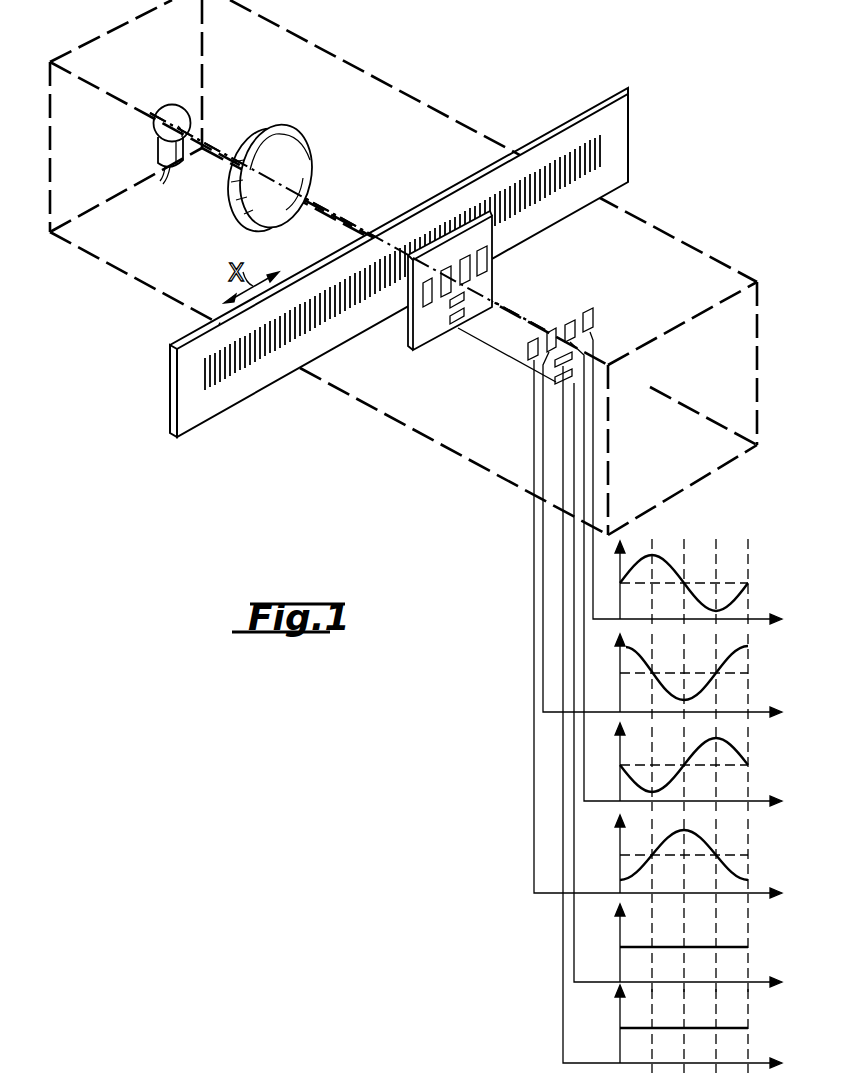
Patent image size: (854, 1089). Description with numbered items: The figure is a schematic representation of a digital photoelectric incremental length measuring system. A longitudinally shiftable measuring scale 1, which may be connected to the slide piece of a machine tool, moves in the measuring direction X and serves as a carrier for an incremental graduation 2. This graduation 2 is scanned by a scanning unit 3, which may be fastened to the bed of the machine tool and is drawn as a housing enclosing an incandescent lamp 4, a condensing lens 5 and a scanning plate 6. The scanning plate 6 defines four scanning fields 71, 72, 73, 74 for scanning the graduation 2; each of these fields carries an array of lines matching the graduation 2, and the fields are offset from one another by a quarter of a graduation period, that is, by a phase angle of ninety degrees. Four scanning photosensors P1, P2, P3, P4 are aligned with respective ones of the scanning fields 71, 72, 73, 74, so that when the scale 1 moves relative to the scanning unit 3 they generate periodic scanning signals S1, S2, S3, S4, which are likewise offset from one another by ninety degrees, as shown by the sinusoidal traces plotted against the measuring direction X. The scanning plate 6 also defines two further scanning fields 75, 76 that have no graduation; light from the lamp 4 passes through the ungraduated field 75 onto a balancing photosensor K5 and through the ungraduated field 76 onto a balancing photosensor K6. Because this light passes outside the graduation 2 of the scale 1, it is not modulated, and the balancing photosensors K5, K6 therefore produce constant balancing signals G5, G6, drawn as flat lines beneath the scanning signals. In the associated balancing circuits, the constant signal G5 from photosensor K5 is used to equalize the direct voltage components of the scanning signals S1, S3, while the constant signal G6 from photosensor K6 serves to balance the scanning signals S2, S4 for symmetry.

The measuring scale 1 is at (410, 262).
The incremental graduation 2 is at (605, 151).
The scanning unit 3 is at (398, 85).
The incandescent lamp 4 is at (165, 111).
The condensing lens 5 is at (298, 137).
The scanning plate 6 is at (451, 303).
The scanning field 71 is at (488, 263).
The scanning field 72 is at (446, 297).
The scanning field 73 is at (470, 277).
The scanning field 74 is at (420, 313).
The scanning field 75 is at (452, 305).
The scanning field 76 is at (457, 326).
The scanning photosensor P1 is at (588, 310).
The scanning photosensor P2 is at (550, 331).
The scanning photosensor P3 is at (568, 321).
The scanning photosensor P4 is at (528, 342).
The balancing photosensor K5 is at (570, 355).
The balancing photosensor K6 is at (572, 372).
The scanning signal S1 is at (699, 585).
The scanning signal S2 is at (699, 679).
The scanning signal S3 is at (699, 768).
The scanning signal S4 is at (699, 860).
The balancing signal G5 is at (696, 949).
The balancing signal G6 is at (696, 1030).